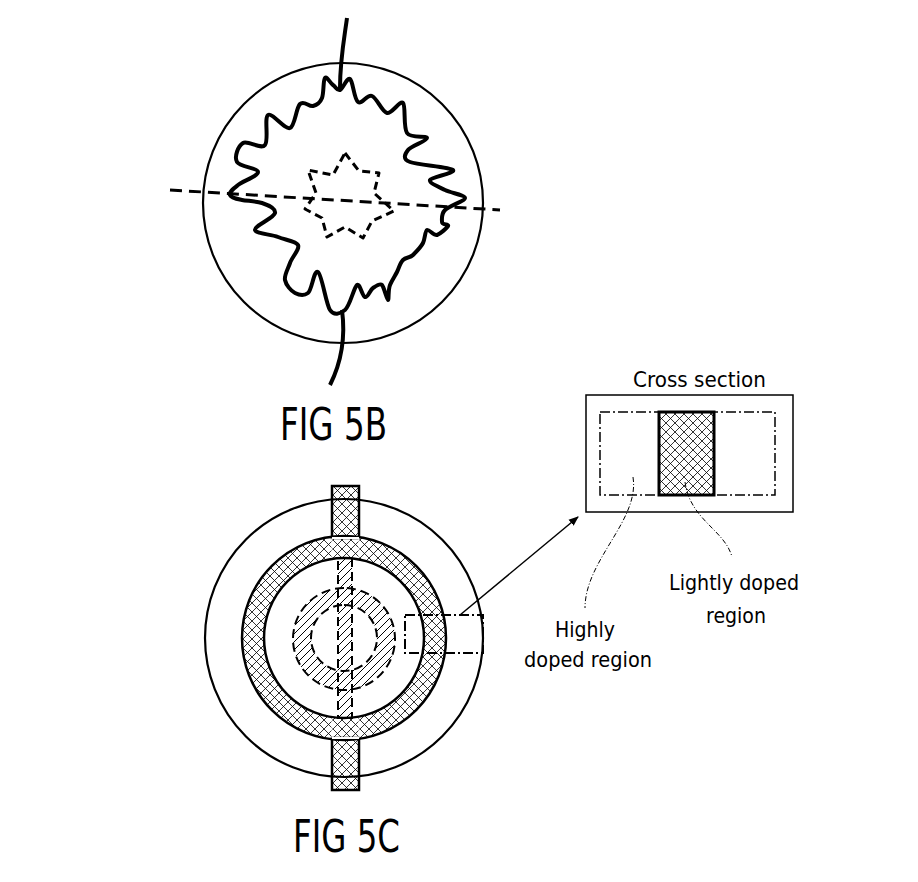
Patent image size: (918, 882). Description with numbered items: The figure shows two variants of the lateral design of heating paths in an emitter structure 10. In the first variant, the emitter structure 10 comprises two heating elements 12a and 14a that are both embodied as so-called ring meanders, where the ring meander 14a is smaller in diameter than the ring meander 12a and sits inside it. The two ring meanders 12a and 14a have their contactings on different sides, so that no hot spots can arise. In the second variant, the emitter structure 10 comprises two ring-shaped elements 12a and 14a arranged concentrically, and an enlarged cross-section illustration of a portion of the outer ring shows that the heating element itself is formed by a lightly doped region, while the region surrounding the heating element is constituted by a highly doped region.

In FIG. 5B, the emitter structure 10 is at (95, 51).
In FIG. 5C, the emitter structure 10 is at (95, 497).
In FIG. 5B, the heating element 12a is at (428, 136).
In FIG. 5C, the heating element 12a is at (270, 573).
In FIG. 5B, the heating element 14a is at (325, 160).
In FIG. 5C, the heating element 14a is at (385, 665).